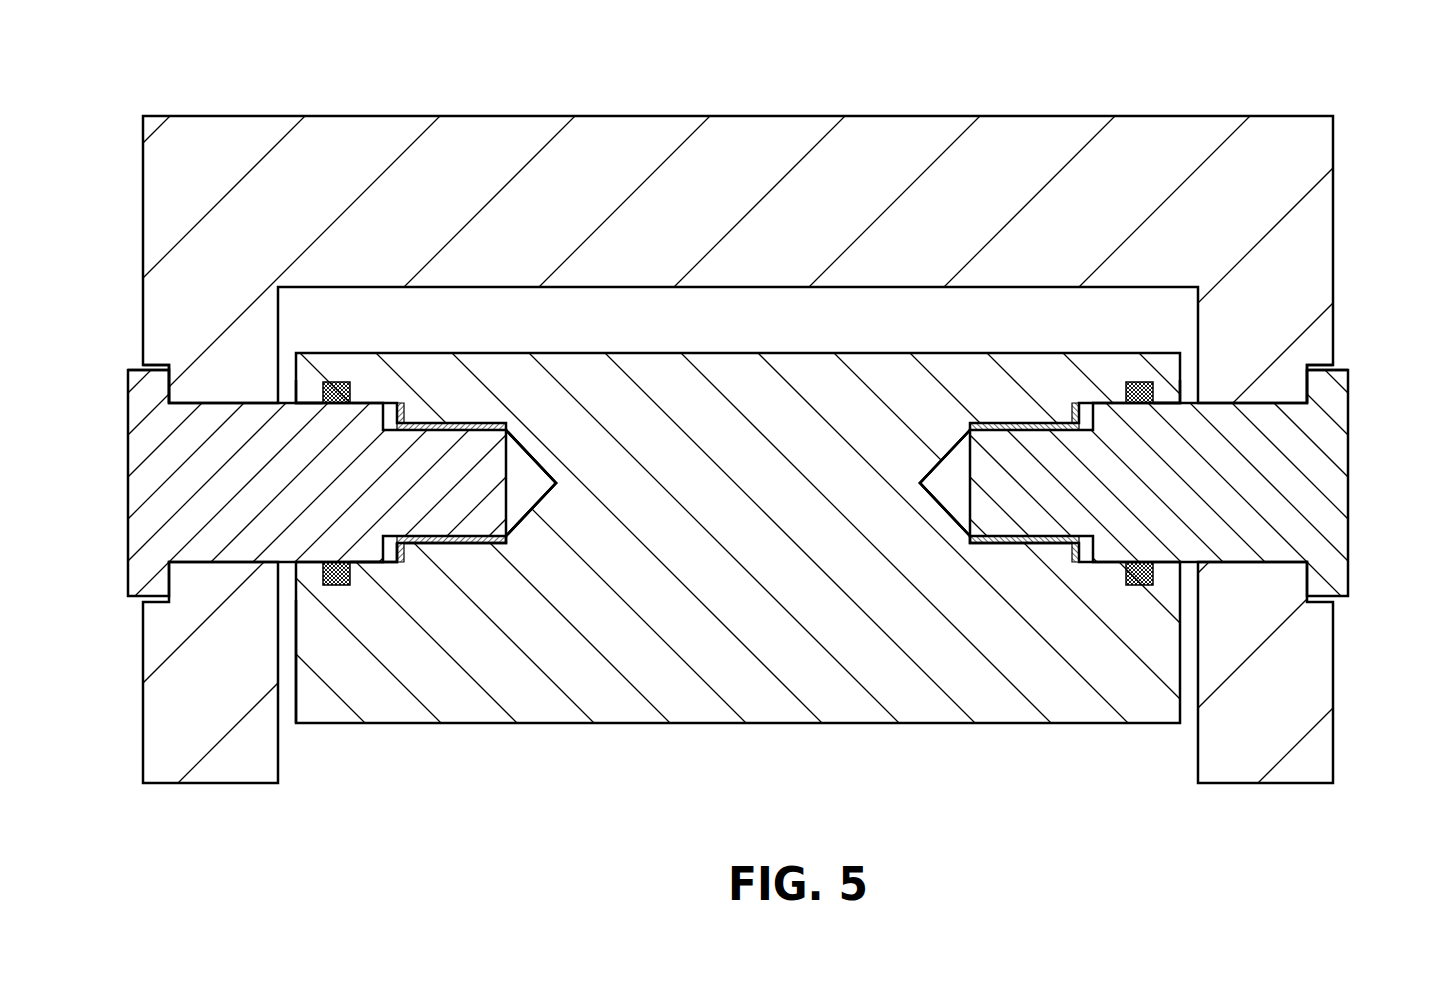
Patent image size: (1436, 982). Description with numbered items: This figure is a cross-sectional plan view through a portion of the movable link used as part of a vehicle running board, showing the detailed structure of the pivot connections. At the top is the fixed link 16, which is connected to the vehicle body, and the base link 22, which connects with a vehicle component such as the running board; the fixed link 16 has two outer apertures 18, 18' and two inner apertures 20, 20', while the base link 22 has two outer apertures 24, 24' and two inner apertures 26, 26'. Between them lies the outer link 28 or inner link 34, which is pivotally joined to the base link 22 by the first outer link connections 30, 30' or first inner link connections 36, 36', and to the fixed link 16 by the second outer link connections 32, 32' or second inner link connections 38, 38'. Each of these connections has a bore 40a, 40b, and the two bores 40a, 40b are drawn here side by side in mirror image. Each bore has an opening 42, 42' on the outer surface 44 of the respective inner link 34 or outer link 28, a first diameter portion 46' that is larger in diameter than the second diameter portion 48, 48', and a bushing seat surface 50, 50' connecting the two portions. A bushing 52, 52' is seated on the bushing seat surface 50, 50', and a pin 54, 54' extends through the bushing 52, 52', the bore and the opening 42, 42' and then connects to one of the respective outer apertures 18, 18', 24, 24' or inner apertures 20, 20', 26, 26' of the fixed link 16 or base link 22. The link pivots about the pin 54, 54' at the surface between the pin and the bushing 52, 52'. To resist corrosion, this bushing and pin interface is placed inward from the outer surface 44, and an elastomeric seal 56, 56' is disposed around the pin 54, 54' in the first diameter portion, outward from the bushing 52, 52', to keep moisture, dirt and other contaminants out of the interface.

The fixed link 16 is at (718, 214).
The base link 22 is at (1150, 140).
The outer aperture 18' is at (107, 331).
The inner aperture 20' is at (107, 331).
The outer aperture 24' is at (107, 331).
The inner aperture 26' is at (107, 331).
The outer aperture 18 is at (1360, 331).
The inner aperture 20 is at (1360, 331).
The outer aperture 24 is at (1360, 331).
The inner aperture 26 is at (1360, 331).
The outer link 28 is at (718, 572).
The inner link 34 is at (877, 723).
The first outer link connection 30' is at (220, 672).
The second outer link connection 32' is at (220, 672).
The first inner link connection 36' is at (220, 672).
The second inner link connection 38' is at (220, 672).
The first outer link connection 30 is at (1212, 672).
The second outer link connection 32 is at (1212, 672).
The first inner link connection 36 is at (1212, 672).
The second inner link connection 38 is at (1212, 672).
The bore 40a is at (566, 449).
The bore 40b is at (906, 533).
The opening 42' is at (300, 219).
The opening 42 is at (1211, 221).
The outer surface 44 is at (300, 670).
The first diameter portion 46' is at (390, 666).
The second diameter portion 48' is at (495, 659).
The second diameter portion 48 is at (1019, 667).
The bushing seat surface 50' is at (460, 372).
The bushing seat surface 50 is at (1021, 372).
The bushing 52' is at (418, 666).
The bushing 52 is at (1061, 659).
The pin 54' is at (353, 514).
The pin 54 is at (1102, 480).
The seal 56' is at (385, 224).
The seal 56 is at (1091, 224).